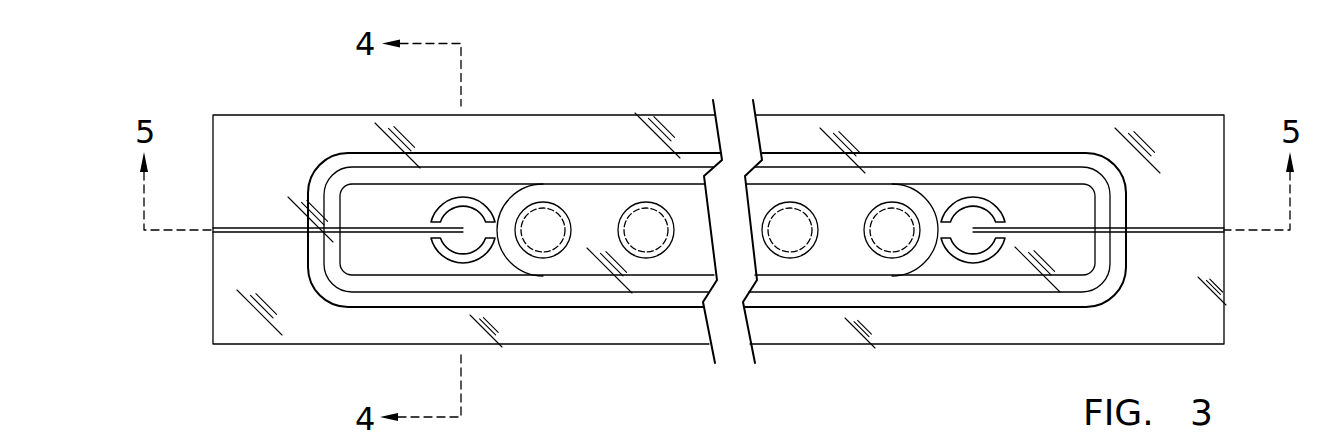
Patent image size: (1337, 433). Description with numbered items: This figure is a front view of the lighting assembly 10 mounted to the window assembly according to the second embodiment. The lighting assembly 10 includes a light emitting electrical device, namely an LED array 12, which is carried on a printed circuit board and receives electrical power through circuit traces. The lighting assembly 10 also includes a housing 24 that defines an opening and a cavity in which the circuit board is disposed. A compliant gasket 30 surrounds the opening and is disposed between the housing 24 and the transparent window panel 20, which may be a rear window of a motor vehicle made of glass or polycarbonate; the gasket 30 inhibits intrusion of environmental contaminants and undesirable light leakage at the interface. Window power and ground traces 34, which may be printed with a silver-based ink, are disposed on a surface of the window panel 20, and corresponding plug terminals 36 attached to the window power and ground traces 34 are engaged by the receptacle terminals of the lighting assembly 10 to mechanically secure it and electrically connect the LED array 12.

The lighting assembly 10 is at (536, 152).
The light emitting diode (LED) array 12 is at (785, 218).
The window panel 20 is at (983, 138).
The housing 24 is at (829, 263).
The gasket 30 is at (1083, 167).
The window power and ground traces 34 is at (263, 233).
The plug terminals 36 is at (468, 242).